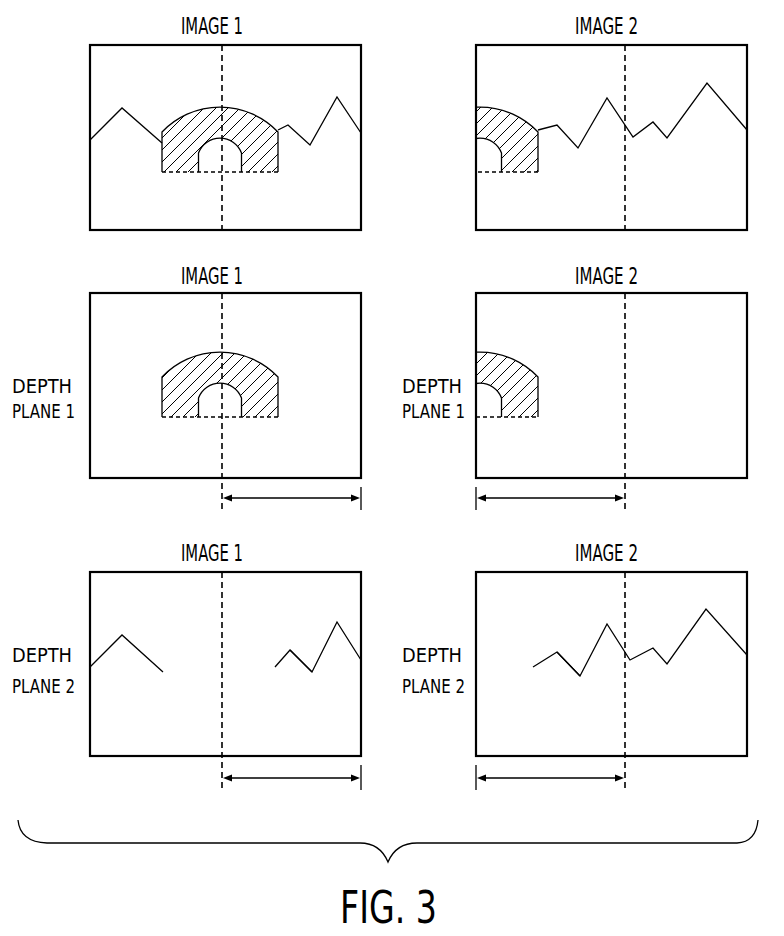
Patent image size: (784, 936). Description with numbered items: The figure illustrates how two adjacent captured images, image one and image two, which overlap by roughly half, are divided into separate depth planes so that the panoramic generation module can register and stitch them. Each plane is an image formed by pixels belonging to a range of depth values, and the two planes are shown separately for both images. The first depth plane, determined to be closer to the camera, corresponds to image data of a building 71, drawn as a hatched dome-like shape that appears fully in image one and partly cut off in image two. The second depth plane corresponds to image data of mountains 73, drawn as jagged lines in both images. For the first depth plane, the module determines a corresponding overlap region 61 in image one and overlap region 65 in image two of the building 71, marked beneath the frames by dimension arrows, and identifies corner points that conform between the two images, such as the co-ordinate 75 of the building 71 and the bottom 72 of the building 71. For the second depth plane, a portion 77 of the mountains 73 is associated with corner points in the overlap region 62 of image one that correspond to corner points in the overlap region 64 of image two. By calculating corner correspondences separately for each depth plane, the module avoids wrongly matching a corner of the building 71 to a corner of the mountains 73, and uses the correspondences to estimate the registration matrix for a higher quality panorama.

The overlap region 61 is at (291, 500).
The overlap region 62 is at (293, 782).
The overlap region 64 is at (558, 782).
The overlap region 65 is at (557, 500).
The building 71 is at (166, 353).
The bottom 72 is at (273, 418).
The mountains 73 is at (145, 648).
The co-ordinate 75 is at (272, 368).
The portion 77 is at (313, 677).